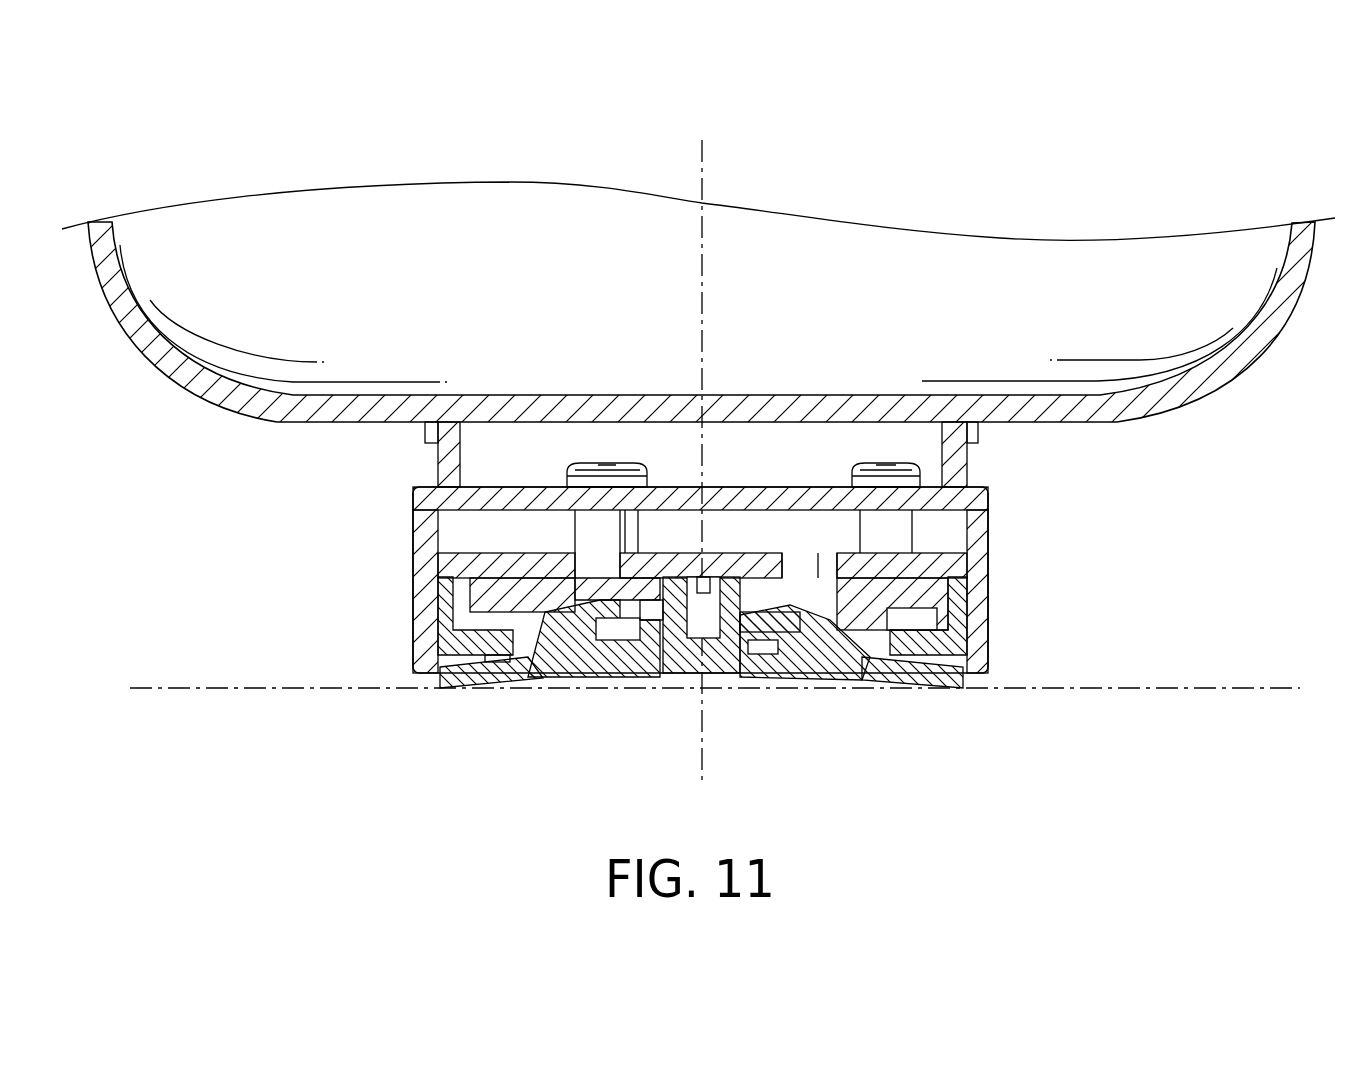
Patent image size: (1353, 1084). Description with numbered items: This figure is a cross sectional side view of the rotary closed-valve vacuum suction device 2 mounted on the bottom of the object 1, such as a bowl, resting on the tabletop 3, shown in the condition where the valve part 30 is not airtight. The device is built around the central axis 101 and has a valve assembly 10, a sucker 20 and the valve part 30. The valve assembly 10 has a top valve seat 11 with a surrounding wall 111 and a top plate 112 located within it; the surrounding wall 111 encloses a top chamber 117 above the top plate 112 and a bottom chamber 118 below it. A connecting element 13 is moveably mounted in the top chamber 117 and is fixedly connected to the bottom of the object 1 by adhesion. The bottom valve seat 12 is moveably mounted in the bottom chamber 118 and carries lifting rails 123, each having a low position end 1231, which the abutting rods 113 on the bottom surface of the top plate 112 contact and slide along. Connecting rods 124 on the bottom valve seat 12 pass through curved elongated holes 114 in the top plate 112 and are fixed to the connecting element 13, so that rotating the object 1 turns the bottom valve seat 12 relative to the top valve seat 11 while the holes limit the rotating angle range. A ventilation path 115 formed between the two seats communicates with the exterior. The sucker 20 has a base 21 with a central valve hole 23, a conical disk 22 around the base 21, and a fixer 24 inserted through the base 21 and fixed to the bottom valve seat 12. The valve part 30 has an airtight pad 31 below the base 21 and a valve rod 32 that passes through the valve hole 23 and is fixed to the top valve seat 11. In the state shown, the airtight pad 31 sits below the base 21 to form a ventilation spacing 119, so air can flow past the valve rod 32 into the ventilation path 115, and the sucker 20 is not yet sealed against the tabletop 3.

The object 1 is at (1252, 404).
The central axis 101 is at (703, 162).
The tabletop 3 is at (1160, 688).
The rotary closed-valve vacuum suction device 2 is at (708, 563).
The valve assembly 10 is at (692, 548).
The top valve seat 11 is at (708, 551).
The surrounding wall 111 is at (436, 527).
The top plate 112 is at (530, 553).
The abutting rods 113 is at (925, 605).
The curved elongated holes 114 is at (613, 563).
The ventilation path 115 is at (800, 580).
The top chamber 117 is at (956, 527).
The bottom chamber 118 is at (946, 650).
The ventilation spacing 119 is at (770, 648).
The bottom valve seat 12 is at (428, 632).
The lifting rails 123 is at (480, 602).
The low position end 1231 is at (932, 618).
The connecting rods 124 is at (592, 530).
The connecting element 13 is at (955, 428).
The sucker 20 is at (535, 695).
The base 21 is at (623, 635).
The conical disk 22 is at (476, 676).
The valve hole 23 is at (662, 620).
The fixer 24 is at (590, 657).
The valve part 30 is at (736, 643).
The airtight pad 31 is at (750, 665).
The valve rod 32 is at (732, 595).